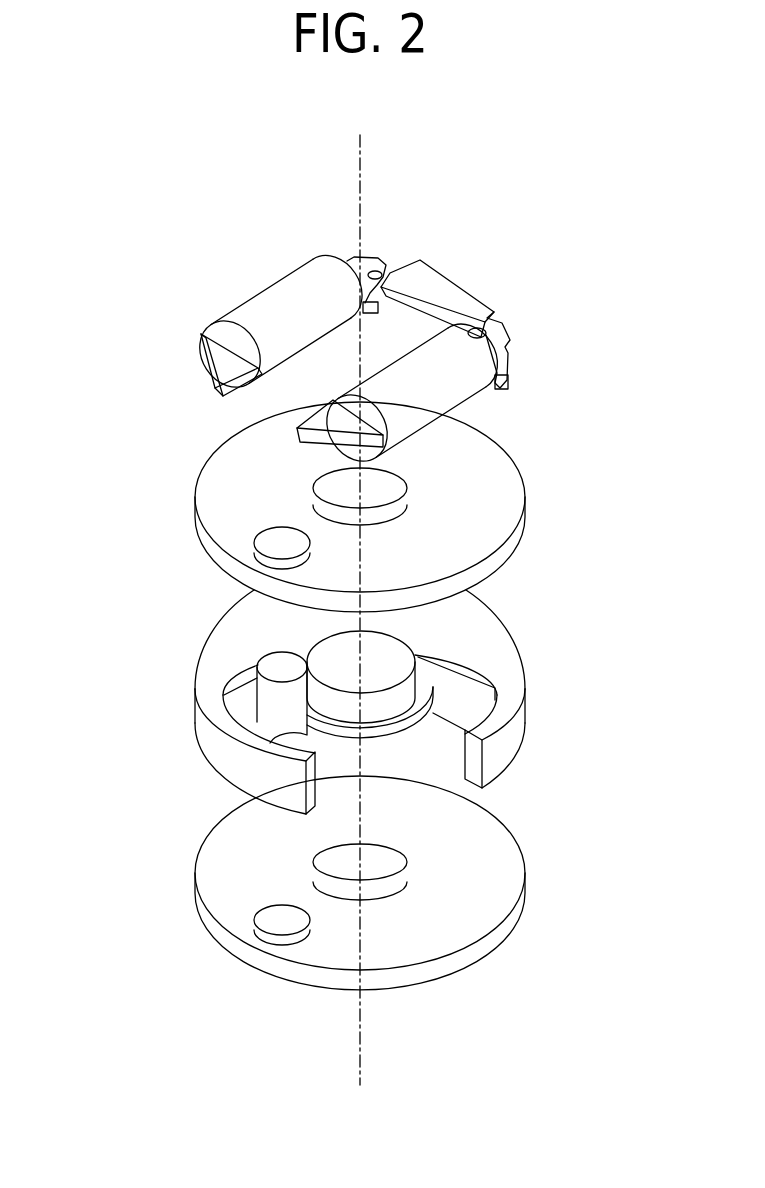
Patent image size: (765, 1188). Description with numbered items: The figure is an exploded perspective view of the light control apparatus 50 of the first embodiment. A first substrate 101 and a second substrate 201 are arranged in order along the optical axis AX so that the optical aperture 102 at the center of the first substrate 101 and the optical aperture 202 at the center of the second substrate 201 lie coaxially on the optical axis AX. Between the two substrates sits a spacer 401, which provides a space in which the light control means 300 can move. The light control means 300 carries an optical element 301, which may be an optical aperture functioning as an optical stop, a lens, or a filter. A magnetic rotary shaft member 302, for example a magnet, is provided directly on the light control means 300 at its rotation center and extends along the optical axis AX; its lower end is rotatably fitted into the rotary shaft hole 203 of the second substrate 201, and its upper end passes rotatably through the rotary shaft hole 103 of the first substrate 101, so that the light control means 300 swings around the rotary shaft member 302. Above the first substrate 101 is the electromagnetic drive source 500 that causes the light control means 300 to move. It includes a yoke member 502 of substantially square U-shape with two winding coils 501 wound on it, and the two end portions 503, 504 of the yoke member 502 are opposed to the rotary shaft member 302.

The optical axis AX is at (366, 180).
The light control apparatus 50 is at (374, 1134).
The first substrate 101 is at (478, 467).
The optical aperture 102 is at (405, 497).
The rotary shaft hole 103 is at (283, 557).
The second substrate 201 is at (488, 860).
The optical aperture 202 is at (360, 896).
The rotary shaft hole 203 is at (267, 927).
The light control means 300 is at (318, 735).
The optical element 301 is at (387, 672).
The rotary shaft member 302 is at (283, 668).
The spacer 401 is at (480, 624).
The electromagnetic drive source 500 is at (433, 269).
The winding coils 501 is at (377, 393).
The yoke member 502 is at (463, 303).
The end portion 503 is at (228, 365).
The end portion 504 is at (318, 420).